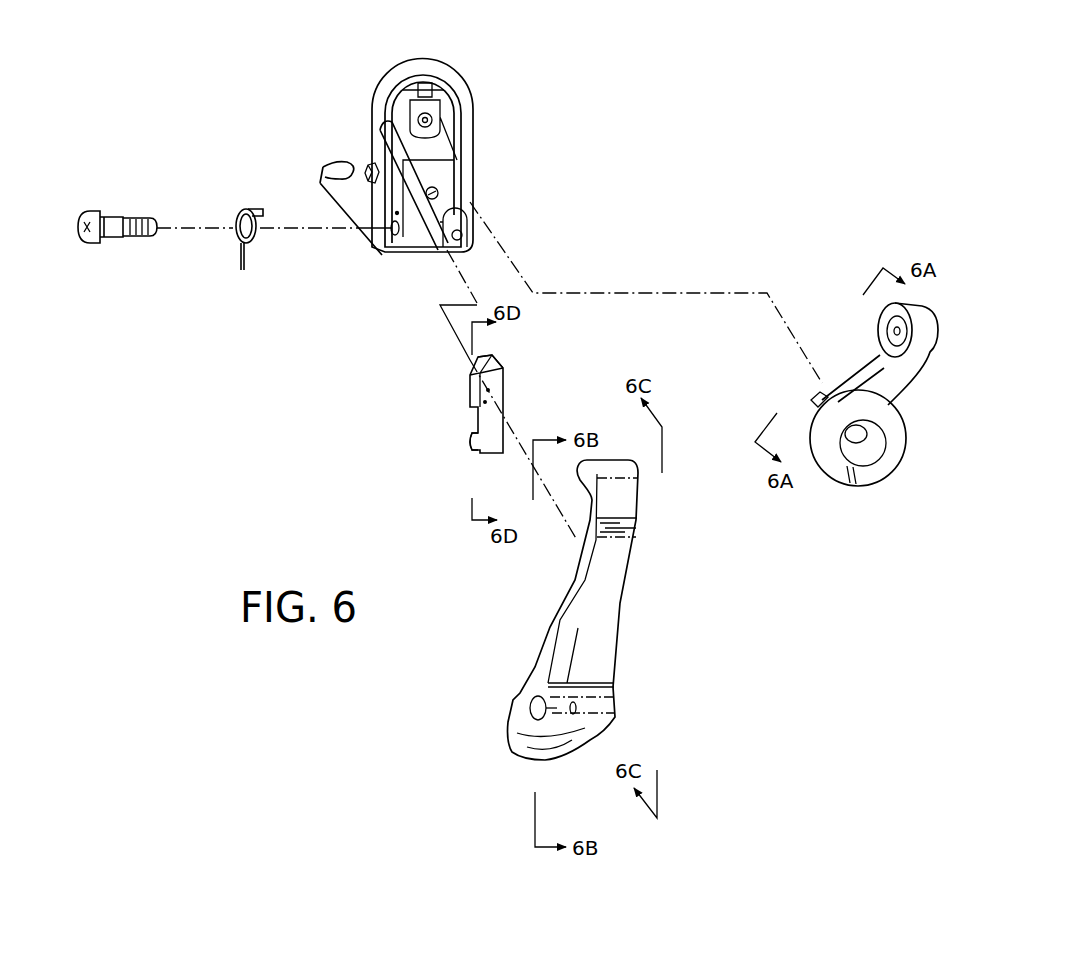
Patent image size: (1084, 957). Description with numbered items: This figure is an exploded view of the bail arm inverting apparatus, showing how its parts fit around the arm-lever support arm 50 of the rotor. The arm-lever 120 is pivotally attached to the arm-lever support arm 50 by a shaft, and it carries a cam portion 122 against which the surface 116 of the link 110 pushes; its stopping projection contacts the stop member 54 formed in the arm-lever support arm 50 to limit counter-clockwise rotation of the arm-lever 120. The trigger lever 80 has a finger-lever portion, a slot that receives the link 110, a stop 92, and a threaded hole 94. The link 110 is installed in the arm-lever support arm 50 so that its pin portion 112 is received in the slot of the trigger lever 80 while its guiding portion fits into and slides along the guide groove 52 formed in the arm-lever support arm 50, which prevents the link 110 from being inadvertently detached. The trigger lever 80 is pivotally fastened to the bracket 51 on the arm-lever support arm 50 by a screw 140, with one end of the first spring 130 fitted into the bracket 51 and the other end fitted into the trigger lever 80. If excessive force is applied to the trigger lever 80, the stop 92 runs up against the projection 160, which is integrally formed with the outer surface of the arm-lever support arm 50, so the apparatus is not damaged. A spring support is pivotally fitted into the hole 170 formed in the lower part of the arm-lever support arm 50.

The arm-lever support arm 50 is at (473, 82).
The bracket 51 is at (388, 250).
The guide groove 52 is at (388, 108).
The stop member 54 is at (468, 102).
The trigger lever 80 is at (649, 512).
The stop 92 is at (510, 740).
The threaded hole 94 is at (510, 747).
The link 110 is at (492, 398).
The pin portion 112 is at (490, 453).
The surface 116 is at (492, 365).
The arm-lever 120 is at (873, 378).
The cam portion 122 is at (817, 405).
The first spring 130 is at (260, 242).
The screw 140 is at (120, 248).
The projection 160 is at (368, 172).
The hole 170 is at (436, 192).